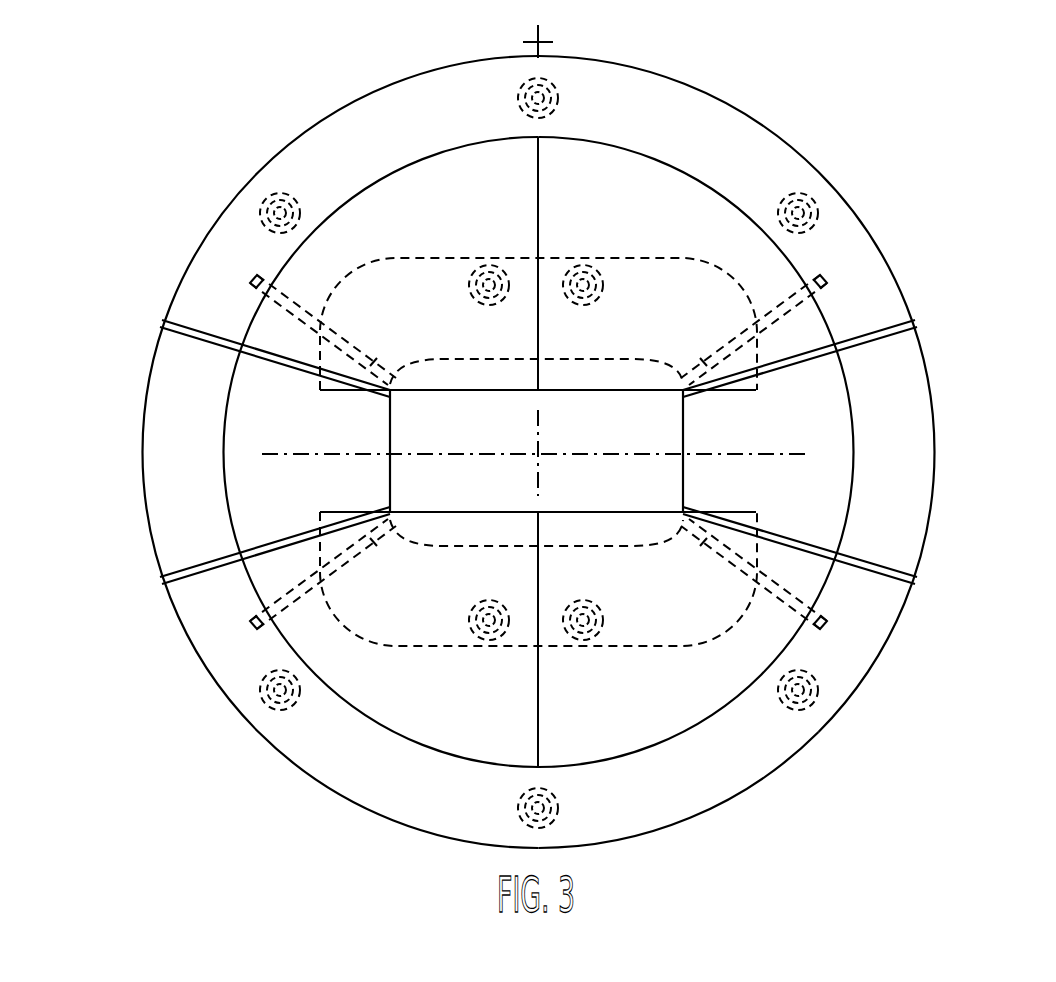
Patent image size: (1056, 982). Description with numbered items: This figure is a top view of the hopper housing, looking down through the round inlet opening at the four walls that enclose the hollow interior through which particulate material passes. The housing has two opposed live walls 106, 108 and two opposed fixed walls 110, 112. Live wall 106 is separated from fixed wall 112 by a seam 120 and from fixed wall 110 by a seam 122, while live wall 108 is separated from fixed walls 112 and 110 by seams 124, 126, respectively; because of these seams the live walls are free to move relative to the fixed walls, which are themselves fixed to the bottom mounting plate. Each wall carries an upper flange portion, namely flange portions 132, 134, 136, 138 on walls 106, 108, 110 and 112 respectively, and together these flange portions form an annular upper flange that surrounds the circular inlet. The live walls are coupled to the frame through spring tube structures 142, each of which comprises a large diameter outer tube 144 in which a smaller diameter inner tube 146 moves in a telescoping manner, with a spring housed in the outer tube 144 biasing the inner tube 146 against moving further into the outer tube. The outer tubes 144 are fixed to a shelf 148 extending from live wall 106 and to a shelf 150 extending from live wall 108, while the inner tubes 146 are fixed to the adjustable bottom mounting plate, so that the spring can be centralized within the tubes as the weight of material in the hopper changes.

The live wall 106 is at (403, 197).
The live wall 108 is at (763, 647).
The fixed wall 110 is at (810, 410).
The fixed wall 112 is at (247, 417).
The seam 120 is at (165, 322).
The seam 122 is at (912, 324).
The seam 124 is at (163, 582).
The seam 126 is at (915, 583).
The upper flange portion 132 is at (853, 243).
The upper flange portion 134 is at (865, 644).
The upper flange portion 136 is at (898, 442).
The upper flange portion 138 is at (158, 464).
The spring tube structure 142 is at (563, 84).
The outer tube 144 is at (297, 197).
The inner tube 146 is at (270, 206).
The shelf 148 is at (643, 288).
The shelf 150 is at (638, 627).